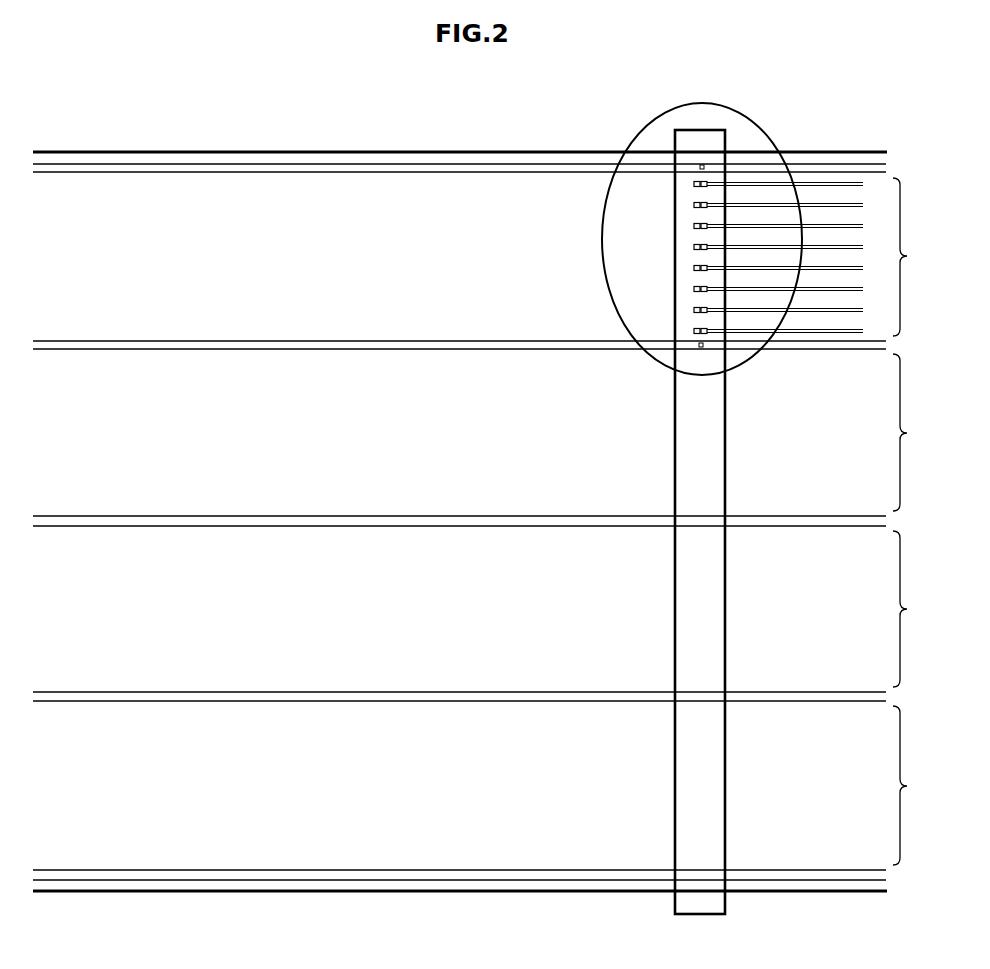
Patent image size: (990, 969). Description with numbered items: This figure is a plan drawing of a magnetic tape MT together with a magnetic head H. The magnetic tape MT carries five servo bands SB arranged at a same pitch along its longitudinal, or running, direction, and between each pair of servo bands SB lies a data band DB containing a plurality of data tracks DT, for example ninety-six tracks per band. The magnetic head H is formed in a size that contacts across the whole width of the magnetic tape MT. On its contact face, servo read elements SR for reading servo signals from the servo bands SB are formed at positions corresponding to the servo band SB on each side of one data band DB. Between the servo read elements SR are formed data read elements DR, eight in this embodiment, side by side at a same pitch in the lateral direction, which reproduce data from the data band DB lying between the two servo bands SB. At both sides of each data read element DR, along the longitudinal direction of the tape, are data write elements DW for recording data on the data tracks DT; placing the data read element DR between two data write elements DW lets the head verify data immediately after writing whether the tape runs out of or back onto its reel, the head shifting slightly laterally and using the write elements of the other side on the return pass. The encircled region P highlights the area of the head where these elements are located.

The magnetic tape MT is at (240, 151).
The servo band SB is at (887, 169).
The data band DB is at (919, 521).
The data track DT is at (827, 181).
The data write element DW is at (700, 183).
The data read element DR is at (703, 185).
The servo read element SR is at (701, 167).
The magnetic head H is at (707, 130).
The head position region P is at (641, 130).